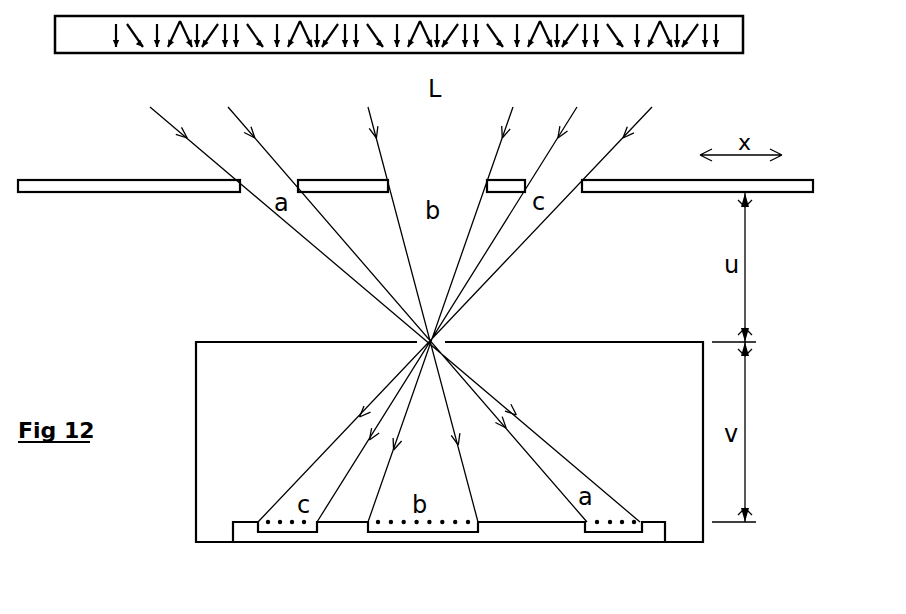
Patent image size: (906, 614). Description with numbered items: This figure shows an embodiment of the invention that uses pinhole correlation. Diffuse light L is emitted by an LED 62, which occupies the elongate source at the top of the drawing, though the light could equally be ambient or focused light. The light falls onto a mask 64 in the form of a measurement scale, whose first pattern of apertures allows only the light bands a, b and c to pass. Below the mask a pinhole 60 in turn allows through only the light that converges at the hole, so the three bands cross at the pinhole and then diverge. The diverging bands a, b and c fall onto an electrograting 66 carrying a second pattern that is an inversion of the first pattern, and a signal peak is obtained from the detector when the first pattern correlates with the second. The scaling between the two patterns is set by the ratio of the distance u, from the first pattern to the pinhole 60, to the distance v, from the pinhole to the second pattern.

The LED 62 is at (718, 38).
The mask 64 is at (115, 185).
The pinhole 60 is at (430, 340).
The electrograting 66 is at (558, 530).